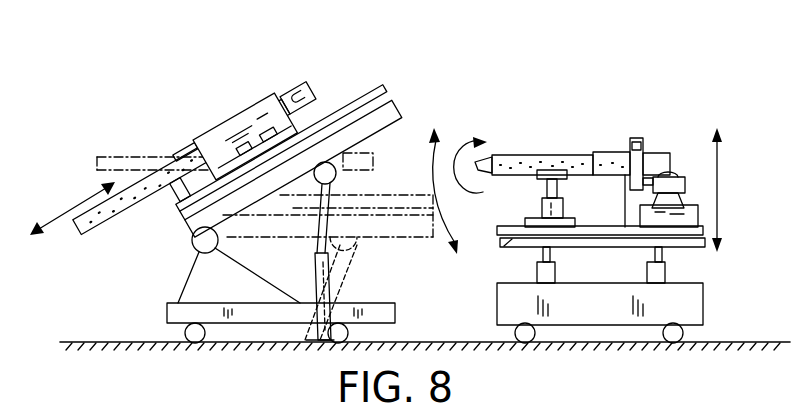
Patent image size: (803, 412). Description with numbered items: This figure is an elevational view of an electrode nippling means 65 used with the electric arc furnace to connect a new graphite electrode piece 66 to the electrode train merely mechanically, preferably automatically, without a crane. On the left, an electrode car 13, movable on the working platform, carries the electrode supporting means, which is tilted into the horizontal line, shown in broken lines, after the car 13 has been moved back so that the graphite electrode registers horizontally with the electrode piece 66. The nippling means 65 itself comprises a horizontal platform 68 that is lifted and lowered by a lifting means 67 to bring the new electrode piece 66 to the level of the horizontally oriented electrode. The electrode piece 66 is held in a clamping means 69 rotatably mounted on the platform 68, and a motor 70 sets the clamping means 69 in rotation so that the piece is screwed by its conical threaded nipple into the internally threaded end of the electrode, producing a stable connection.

The car 13 is at (183, 310).
The electrode nippling means 65 is at (609, 114).
The graphite electrode piece 66 is at (523, 155).
The lifting means 67 is at (649, 270).
The horizontal platform 68 is at (517, 243).
The clamping means 69 is at (643, 138).
The motor 70 is at (682, 172).